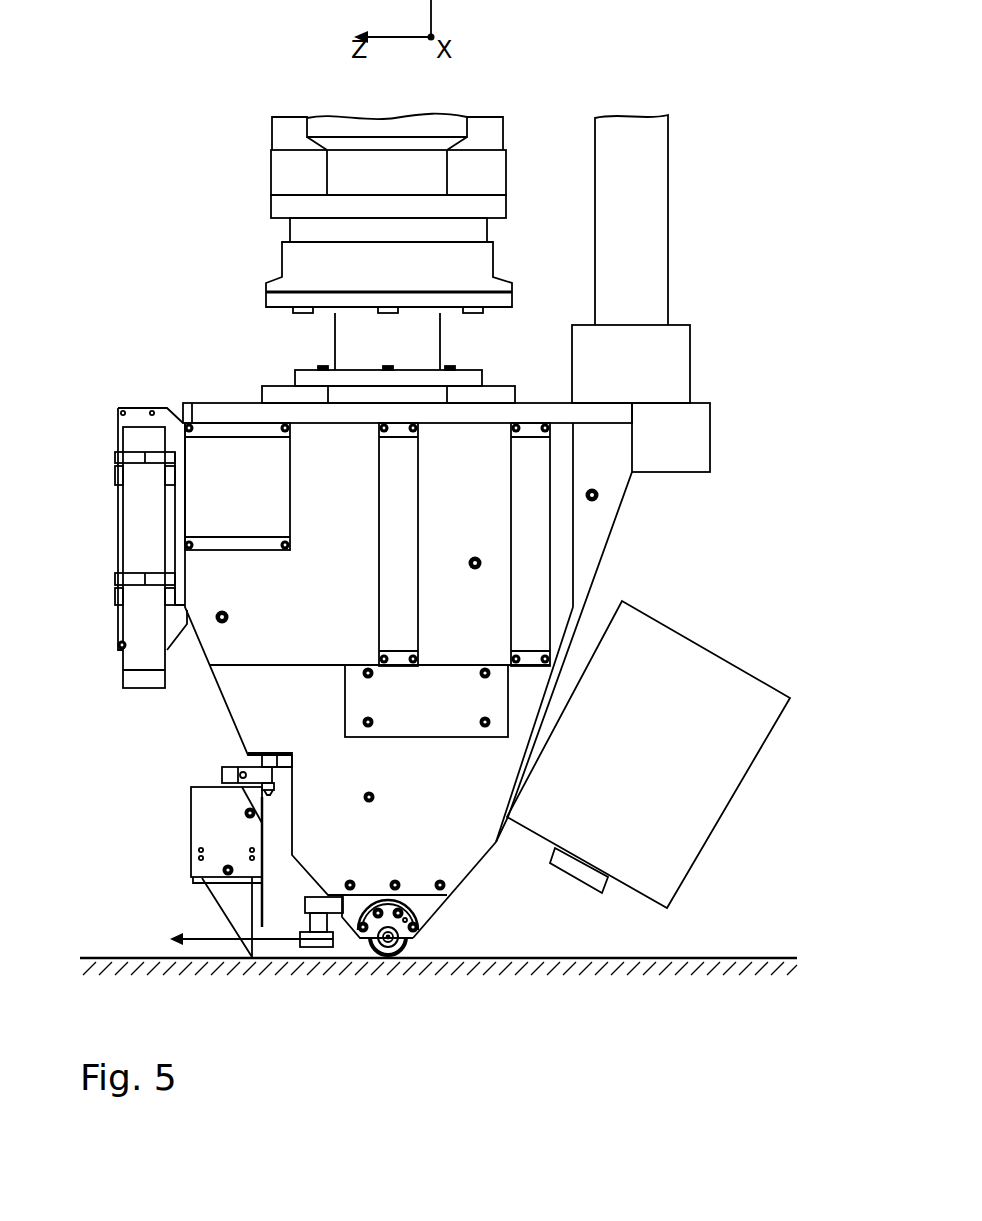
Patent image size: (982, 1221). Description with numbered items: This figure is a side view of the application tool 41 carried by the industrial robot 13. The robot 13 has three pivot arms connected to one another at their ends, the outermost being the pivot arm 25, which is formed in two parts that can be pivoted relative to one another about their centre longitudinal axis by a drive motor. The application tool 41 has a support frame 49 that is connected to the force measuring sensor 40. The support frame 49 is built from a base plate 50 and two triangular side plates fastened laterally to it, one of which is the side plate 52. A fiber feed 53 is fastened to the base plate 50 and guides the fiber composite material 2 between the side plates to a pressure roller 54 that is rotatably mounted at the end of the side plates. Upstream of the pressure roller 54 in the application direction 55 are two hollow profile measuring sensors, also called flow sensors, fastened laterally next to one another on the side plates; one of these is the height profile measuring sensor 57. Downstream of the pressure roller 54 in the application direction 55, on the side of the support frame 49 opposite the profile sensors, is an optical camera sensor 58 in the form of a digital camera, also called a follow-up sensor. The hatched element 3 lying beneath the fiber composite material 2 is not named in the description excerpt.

The industrial robot 13 is at (269, 163).
The pivot arm 25 is at (289, 232).
The force measuring sensor 40 is at (270, 393).
The application tool 41 is at (176, 403).
The fiber feed 53 is at (660, 281).
The base plate 50 is at (540, 405).
The support frame 49 is at (608, 543).
The optical camera sensor 58 is at (656, 630).
The hollow profile measuring sensor 57 is at (200, 837).
The application direction 55 is at (203, 937).
The fiber composite material 2 is at (767, 957).
The substrate 3 is at (665, 968).
The pressure roller 54 is at (372, 948).
The side plate 52 is at (462, 857).